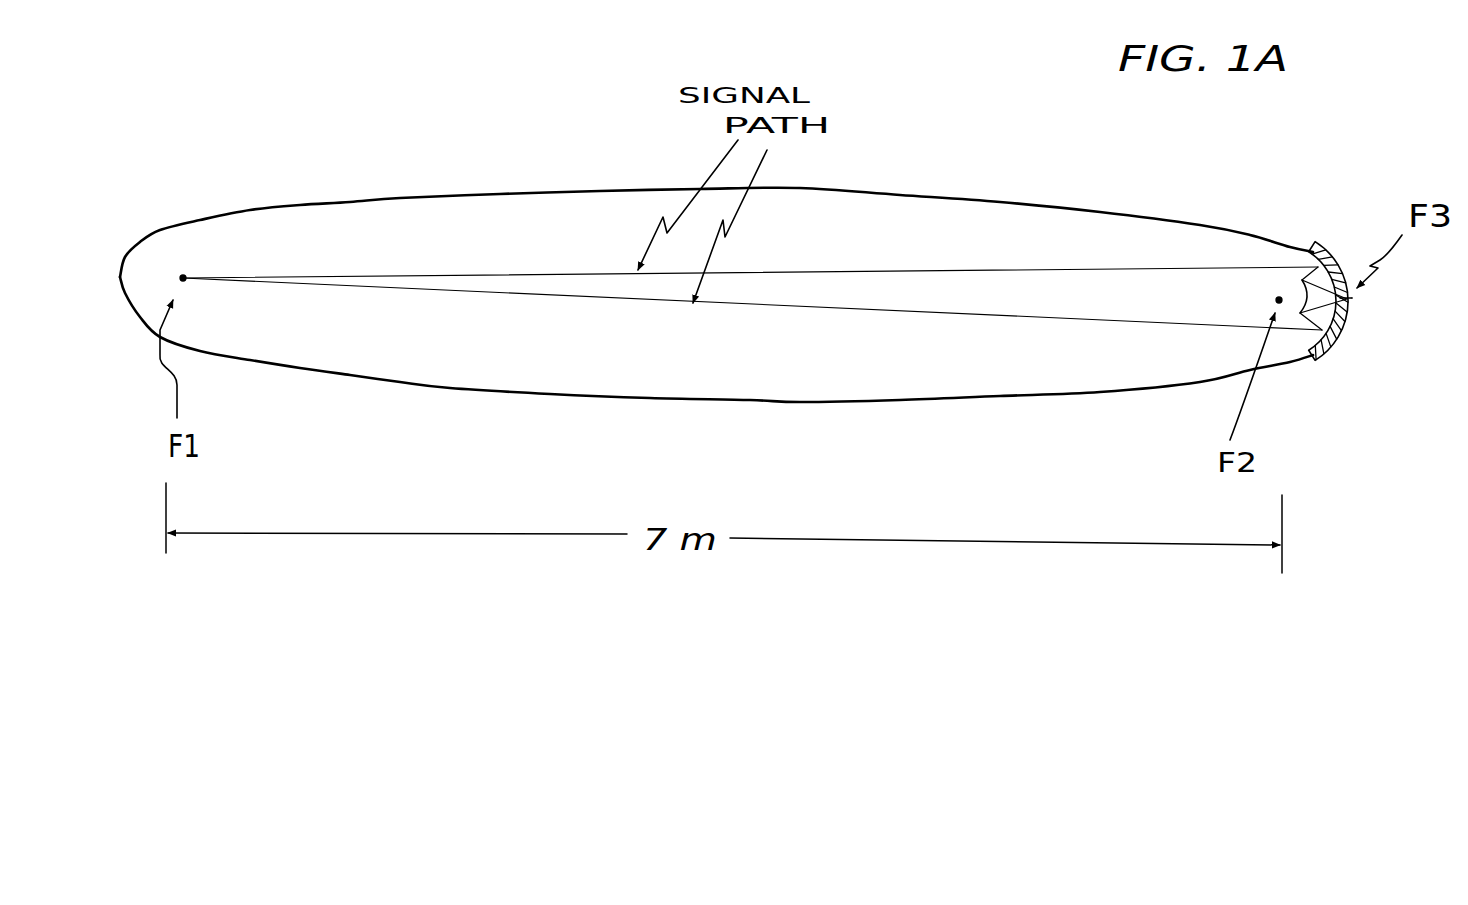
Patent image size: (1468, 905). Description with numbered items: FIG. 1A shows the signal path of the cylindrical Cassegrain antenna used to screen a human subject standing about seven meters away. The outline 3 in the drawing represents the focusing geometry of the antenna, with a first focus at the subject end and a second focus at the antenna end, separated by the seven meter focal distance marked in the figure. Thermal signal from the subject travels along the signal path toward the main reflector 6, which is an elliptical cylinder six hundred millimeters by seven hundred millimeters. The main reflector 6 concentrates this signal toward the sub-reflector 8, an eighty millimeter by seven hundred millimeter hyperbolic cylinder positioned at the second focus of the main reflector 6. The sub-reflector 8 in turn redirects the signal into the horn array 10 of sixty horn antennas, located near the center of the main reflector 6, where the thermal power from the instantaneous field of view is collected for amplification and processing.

The elliptical reflector enclosure 3 is at (870, 187).
The main reflector 6 is at (1331, 347).
The sub-reflector 8 is at (1287, 274).
The horn array 10 is at (1360, 307).